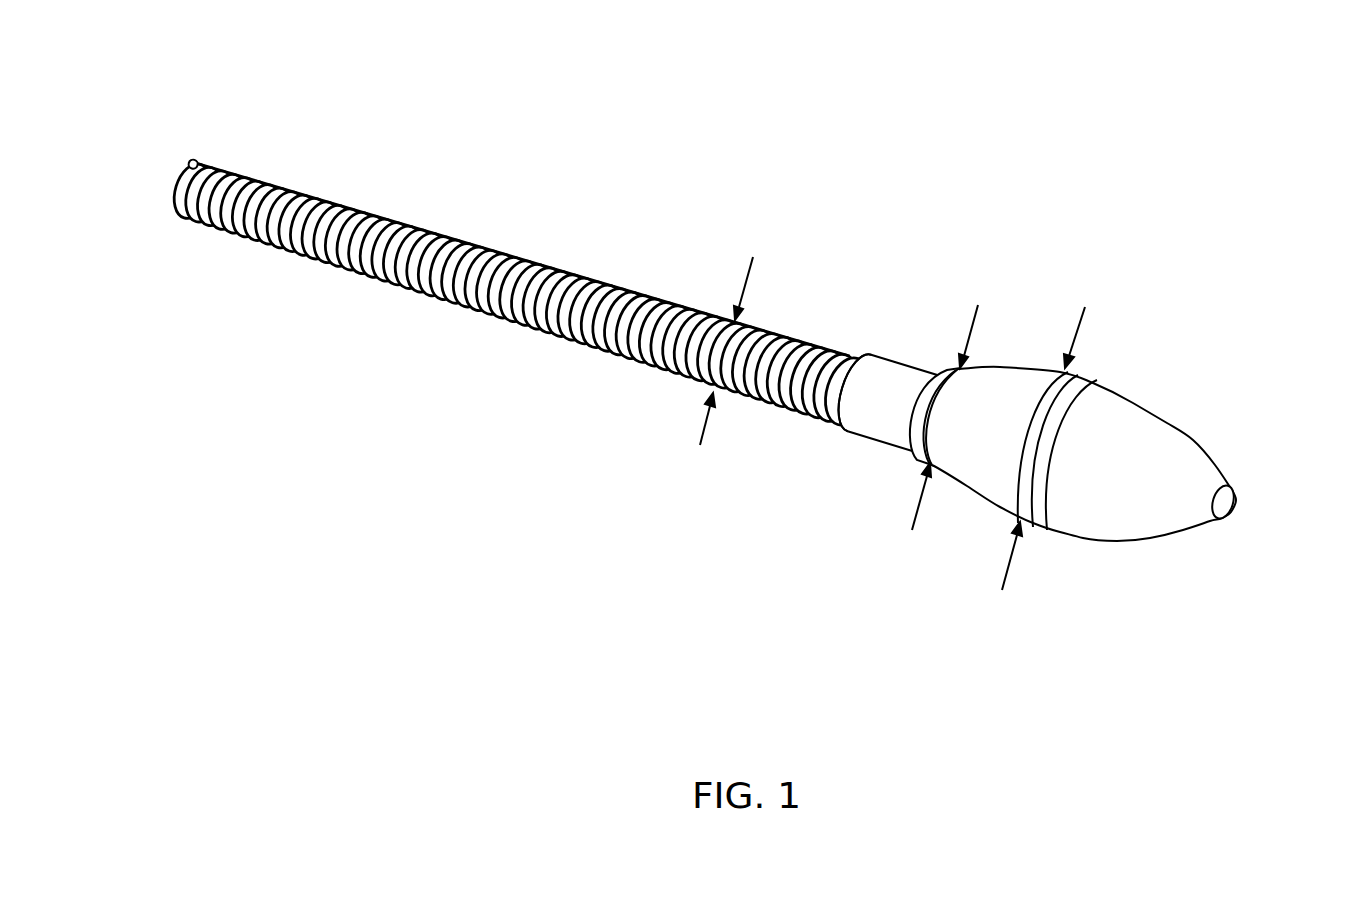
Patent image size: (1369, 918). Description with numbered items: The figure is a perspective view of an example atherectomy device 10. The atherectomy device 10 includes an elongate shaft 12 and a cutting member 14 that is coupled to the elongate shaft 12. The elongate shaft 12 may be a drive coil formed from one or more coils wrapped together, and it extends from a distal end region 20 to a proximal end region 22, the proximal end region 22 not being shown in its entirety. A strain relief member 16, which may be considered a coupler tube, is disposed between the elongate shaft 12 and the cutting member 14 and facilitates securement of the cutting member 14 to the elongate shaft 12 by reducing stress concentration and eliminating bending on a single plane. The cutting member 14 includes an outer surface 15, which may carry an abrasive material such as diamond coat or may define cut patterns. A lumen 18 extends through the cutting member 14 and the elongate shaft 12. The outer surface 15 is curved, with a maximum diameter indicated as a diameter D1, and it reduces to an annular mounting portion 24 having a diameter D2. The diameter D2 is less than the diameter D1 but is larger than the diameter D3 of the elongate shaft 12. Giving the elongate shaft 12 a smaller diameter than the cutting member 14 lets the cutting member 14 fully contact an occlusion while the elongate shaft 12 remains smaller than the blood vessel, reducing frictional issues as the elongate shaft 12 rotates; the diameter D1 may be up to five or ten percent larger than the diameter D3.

The atherectomy device 10 is at (821, 92).
The elongate shaft 12 is at (666, 216).
The cutting member 14 is at (1174, 380).
The outer surface 15 is at (1122, 481).
The strain relief member 16 is at (893, 372).
The lumen 18 is at (153, 175).
The distal end region 20 is at (830, 459).
The proximal end region 22 is at (207, 265).
The annular mounting portion 24 is at (910, 423).
The diameter D1 is at (1036, 464).
The diameter D2 is at (938, 436).
The diameter D3 is at (718, 370).